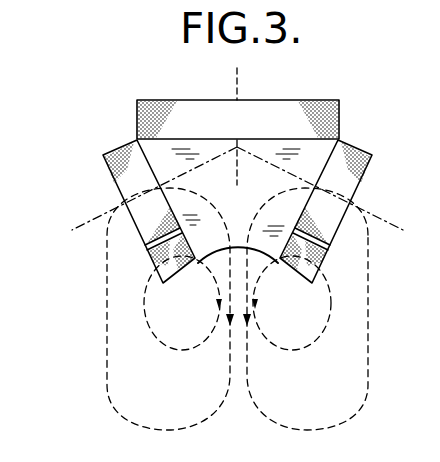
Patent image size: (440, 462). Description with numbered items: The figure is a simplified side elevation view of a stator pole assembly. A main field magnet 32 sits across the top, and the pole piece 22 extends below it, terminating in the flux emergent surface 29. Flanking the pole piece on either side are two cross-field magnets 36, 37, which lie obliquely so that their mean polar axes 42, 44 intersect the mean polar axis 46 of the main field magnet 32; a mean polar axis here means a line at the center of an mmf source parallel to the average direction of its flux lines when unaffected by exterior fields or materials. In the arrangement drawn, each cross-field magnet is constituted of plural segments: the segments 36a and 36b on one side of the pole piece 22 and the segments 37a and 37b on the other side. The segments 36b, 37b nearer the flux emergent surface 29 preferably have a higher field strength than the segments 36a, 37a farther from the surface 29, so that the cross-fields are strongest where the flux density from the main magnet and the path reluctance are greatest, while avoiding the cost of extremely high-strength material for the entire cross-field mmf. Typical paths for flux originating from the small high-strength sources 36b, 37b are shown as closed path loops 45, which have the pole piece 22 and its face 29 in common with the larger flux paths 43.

The pole piece 22 is at (252, 207).
The flux emergent surface 29 is at (217, 258).
The main field magnet 32 is at (340, 115).
The cross-field magnet 36 is at (349, 212).
The cross-field magnet segment 36a is at (350, 181).
The cross-field magnet segment 36b is at (283, 263).
The cross-field magnet 37 is at (120, 214).
The cross-field magnet segment 37a is at (122, 180).
The cross-field magnet segment 37b is at (200, 262).
The mean polar axis 42 is at (385, 217).
The flux path 43 is at (106, 357).
The mean polar axis 44 is at (102, 218).
The closed path loops 45 is at (190, 351).
The mean polar axis 46 is at (236, 81).